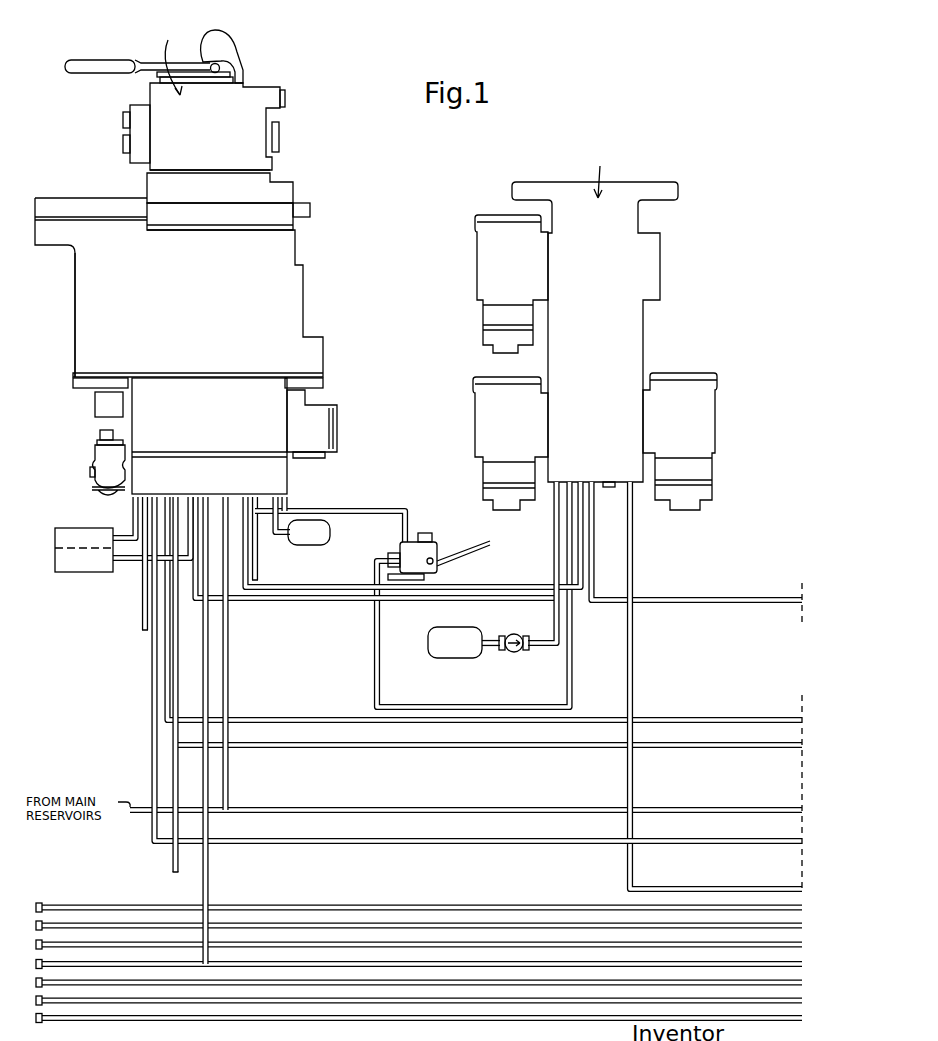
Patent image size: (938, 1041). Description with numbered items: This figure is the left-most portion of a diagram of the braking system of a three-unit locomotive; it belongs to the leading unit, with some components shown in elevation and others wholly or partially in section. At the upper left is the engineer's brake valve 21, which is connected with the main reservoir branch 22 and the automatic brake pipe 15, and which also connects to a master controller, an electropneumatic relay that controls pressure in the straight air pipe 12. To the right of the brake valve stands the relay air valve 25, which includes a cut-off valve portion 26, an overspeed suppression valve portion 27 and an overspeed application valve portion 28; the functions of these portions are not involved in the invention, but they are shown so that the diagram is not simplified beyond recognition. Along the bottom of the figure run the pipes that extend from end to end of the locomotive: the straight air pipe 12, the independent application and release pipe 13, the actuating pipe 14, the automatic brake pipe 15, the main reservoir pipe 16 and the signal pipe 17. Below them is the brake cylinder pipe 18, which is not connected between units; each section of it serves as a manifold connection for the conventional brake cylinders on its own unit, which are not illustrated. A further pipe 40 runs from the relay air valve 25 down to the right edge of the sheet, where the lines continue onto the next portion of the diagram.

The straight air pipe 12 is at (278, 906).
The independent application and release pipe 13 is at (323, 914).
The actuating pipe 14 is at (360, 933).
The automatic brake pipe 15 is at (388, 952).
The main reservoir pipe 16 is at (410, 971).
The signal pipe 17 is at (442, 989).
The brake cylinder pipe 18 is at (465, 1007).
The engineer's brake valve 21 is at (186, 251).
The main reservoir branch 22 is at (475, 806).
The relay air valve 25 is at (594, 308).
The cut-off valve portion 26 is at (511, 284).
The overspeed suppression valve portion 27 is at (510, 443).
The overspeed application valve portion 28 is at (680, 441).
The pipe 40 is at (710, 886).